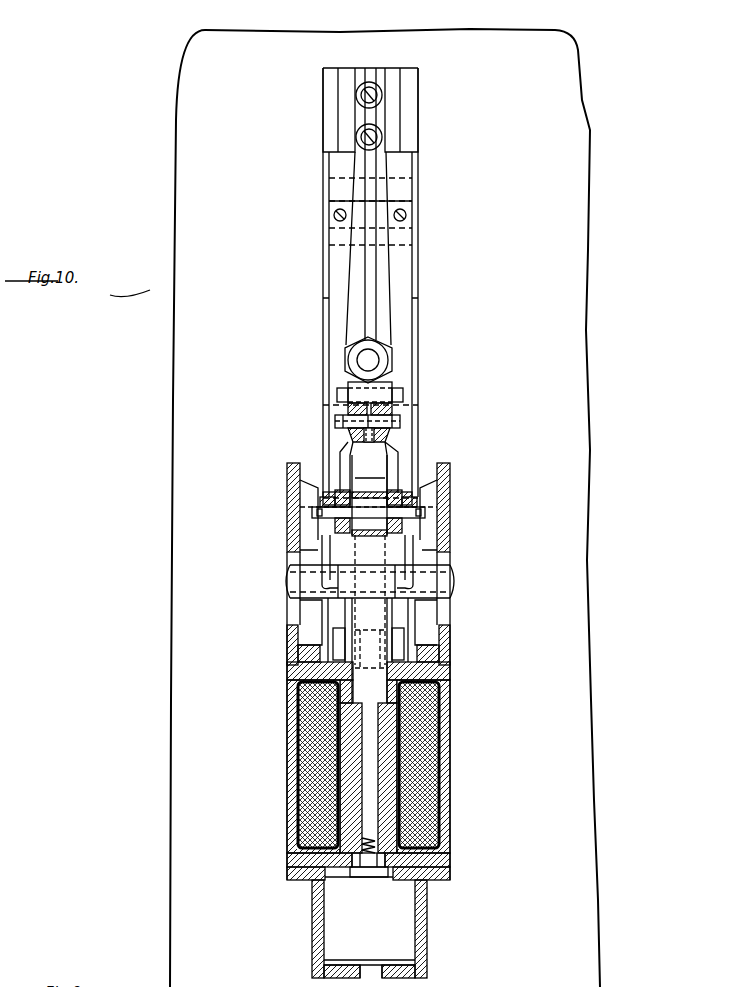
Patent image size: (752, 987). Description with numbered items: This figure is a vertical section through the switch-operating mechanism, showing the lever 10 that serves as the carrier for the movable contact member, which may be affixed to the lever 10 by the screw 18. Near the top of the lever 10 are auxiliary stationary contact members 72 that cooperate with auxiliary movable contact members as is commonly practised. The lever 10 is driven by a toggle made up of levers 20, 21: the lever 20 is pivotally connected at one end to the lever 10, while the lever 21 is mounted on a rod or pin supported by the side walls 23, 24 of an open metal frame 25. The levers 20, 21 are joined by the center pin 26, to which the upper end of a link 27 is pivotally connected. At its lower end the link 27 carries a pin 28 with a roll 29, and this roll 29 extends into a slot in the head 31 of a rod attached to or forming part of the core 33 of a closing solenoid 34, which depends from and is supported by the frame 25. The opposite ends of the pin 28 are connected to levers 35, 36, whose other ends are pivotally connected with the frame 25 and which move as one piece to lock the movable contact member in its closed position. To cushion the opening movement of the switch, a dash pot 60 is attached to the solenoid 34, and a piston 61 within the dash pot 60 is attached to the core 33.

The lever 10 is at (360, 167).
The auxiliary stationary contact member 72 is at (350, 72).
The screw 18 is at (370, 360).
The toggle lever 20 is at (348, 406).
The center pin 26 is at (402, 421).
The toggle lever 21 is at (371, 438).
The link 27 is at (343, 452).
The head 31 is at (388, 542).
The side wall 23 is at (447, 470).
The side wall 24 is at (290, 488).
The pin 28 is at (425, 508).
The roll 29 is at (362, 522).
The lever 35 is at (322, 558).
The lever 36 is at (412, 555).
The open metal frame 25 is at (287, 655).
The solenoid 34 is at (437, 756).
The core 33 is at (387, 795).
The piston 61 is at (332, 878).
The dash pot 60 is at (422, 918).